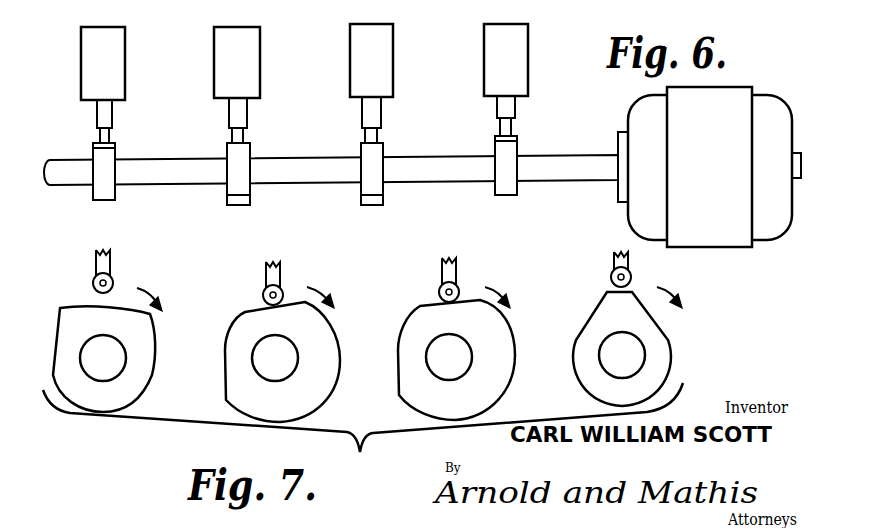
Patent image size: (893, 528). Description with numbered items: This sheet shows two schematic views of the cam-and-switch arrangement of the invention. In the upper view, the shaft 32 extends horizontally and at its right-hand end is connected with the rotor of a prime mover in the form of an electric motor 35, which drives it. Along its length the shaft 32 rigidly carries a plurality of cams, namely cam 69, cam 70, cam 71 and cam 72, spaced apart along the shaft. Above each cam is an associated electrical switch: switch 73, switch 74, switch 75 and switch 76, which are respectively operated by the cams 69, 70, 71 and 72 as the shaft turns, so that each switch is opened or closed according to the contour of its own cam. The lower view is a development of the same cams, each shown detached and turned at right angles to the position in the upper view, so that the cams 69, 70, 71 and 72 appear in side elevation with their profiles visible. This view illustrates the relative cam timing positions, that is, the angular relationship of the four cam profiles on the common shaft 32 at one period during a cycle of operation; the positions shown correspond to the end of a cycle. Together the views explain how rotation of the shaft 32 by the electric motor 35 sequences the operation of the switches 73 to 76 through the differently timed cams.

In FIG. 6, the shaft 32 is at (172, 168).
In FIG. 7, the shaft 32 is at (98, 353).
In FIG. 6, the electric motor 35 is at (713, 235).
In FIG. 6, the cam 69 is at (104, 166).
In FIG. 7, the cam 69 is at (140, 372).
In FIG. 6, the cam 70 is at (240, 166).
In FIG. 7, the cam 70 is at (323, 370).
In FIG. 6, the cam 71 is at (371, 167).
In FIG. 7, the cam 71 is at (500, 365).
In FIG. 6, the cam 72 is at (508, 163).
In FIG. 7, the cam 72 is at (657, 352).
In FIG. 6, the switch 73 is at (114, 43).
In FIG. 6, the switch 74 is at (250, 40).
In FIG. 6, the switch 75 is at (383, 42).
In FIG. 6, the switch 76 is at (518, 40).